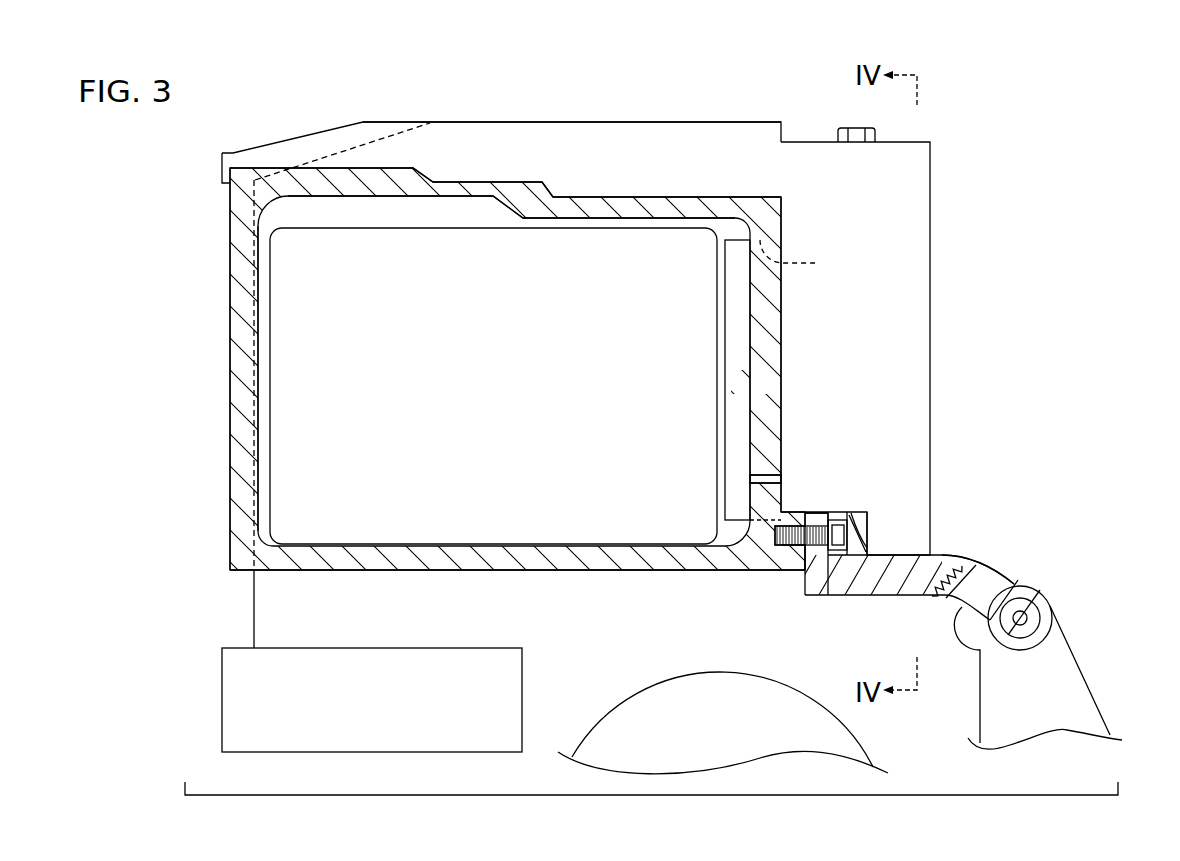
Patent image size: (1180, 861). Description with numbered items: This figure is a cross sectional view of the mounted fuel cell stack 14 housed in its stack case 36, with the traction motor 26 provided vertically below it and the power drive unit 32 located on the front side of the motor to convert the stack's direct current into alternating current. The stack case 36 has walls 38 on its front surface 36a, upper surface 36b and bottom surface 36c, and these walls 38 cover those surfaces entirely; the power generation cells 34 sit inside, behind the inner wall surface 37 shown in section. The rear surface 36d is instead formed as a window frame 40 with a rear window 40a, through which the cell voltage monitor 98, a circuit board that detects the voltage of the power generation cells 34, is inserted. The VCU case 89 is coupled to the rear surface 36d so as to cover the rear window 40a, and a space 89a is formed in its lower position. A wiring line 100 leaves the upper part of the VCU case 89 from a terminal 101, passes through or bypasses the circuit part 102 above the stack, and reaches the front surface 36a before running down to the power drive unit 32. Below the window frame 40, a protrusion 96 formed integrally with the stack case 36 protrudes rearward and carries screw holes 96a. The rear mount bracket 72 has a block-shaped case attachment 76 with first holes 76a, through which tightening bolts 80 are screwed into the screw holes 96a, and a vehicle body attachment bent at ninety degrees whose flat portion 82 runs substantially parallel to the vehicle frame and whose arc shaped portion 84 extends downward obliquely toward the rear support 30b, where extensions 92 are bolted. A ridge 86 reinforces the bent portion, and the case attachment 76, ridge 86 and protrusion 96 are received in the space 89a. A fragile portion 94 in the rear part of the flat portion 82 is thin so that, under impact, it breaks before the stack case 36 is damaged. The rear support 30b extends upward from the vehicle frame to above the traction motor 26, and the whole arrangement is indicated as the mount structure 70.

The fuel cell stack 14 is at (178, 255).
The traction motor 26 is at (643, 690).
The rear support 30b is at (1085, 706).
The power drive unit 32 is at (222, 696).
The power generation cells 34 is at (428, 524).
The stack case 36 is at (210, 348).
The front surface 36a is at (230, 437).
The upper surface 36b is at (497, 182).
The bottom surface 36c is at (290, 573).
The rear surface 36d is at (782, 310).
The inner surface of upper wall 37 is at (417, 197).
The walls 38 is at (243, 293).
The window frame 40 is at (773, 410).
The rear window 40a is at (805, 257).
The support structure 70 is at (1018, 550).
The rear mount bracket 72 is at (947, 548).
The case attachment 76 is at (817, 520).
The first holes 76a is at (822, 536).
The tightening bolts 80 is at (838, 550).
The flat portion 82 is at (870, 588).
The arc shaped portion 84 is at (965, 617).
The ridge 86 is at (852, 537).
The VCU case 89 is at (931, 251).
The space 89a is at (870, 527).
The extensions 92 is at (1034, 604).
The fragile portion 94 is at (960, 587).
The protrusion 96 is at (792, 572).
The screw holes 96a is at (780, 519).
The cell voltage monitor 98 is at (727, 295).
The wiring line 100 is at (641, 122).
The terminal 101 is at (850, 128).
The circuit part 102 is at (311, 136).